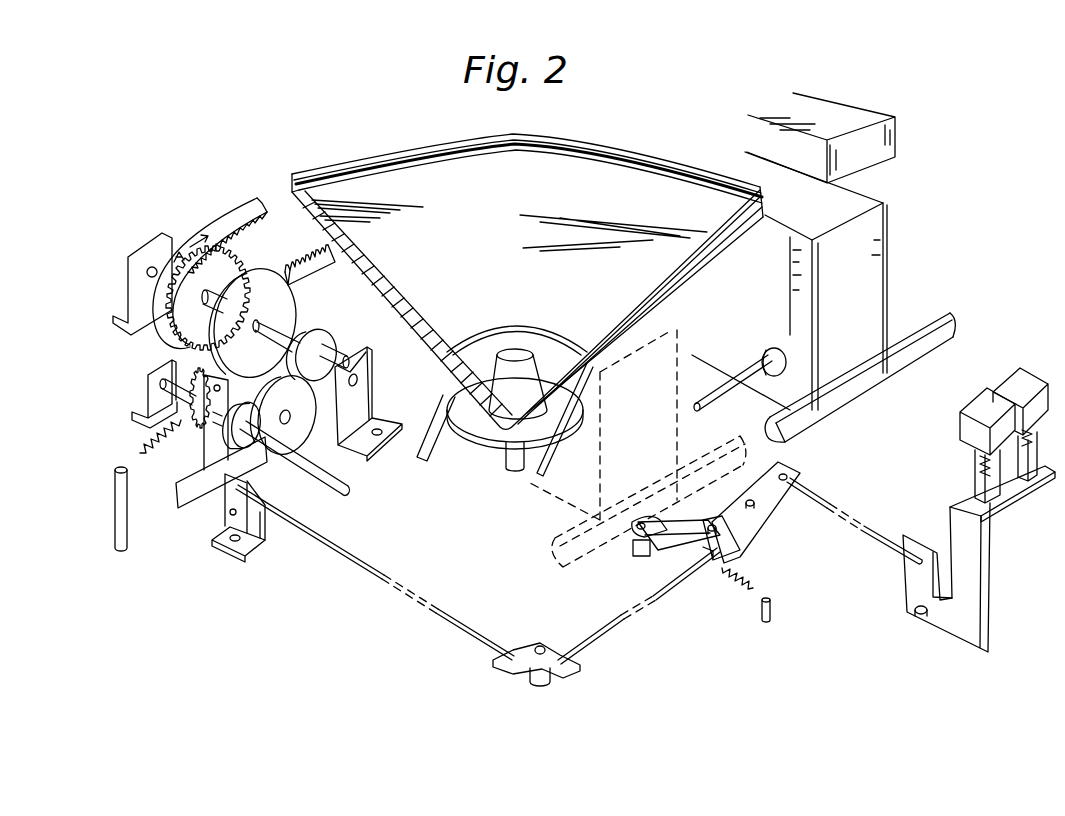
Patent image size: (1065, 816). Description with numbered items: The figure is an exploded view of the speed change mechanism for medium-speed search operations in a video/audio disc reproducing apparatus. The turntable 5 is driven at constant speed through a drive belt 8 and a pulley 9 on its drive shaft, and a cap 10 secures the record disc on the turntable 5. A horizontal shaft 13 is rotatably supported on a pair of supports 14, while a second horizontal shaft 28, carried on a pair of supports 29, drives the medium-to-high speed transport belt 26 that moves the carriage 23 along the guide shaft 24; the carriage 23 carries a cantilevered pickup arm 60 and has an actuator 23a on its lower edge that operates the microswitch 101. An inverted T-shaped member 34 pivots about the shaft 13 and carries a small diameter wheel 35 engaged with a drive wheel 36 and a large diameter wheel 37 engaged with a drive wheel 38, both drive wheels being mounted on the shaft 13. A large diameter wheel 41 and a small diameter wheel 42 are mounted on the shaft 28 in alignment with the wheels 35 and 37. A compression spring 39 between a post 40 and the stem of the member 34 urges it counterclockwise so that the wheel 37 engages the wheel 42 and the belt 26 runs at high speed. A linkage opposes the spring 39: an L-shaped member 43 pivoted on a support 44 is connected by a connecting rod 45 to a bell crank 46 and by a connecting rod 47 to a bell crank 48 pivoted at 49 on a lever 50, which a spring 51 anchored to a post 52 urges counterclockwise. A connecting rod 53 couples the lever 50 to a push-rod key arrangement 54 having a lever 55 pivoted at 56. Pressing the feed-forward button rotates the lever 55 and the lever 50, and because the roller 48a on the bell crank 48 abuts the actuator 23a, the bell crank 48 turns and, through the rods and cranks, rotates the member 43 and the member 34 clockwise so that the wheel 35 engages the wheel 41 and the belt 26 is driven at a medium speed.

The turntable 5 is at (520, 148).
The drive belt 8 is at (552, 458).
The pulley 9 is at (498, 447).
The cap 10 is at (518, 350).
The horizontal shaft 13 is at (340, 492).
The supports 14 is at (147, 392).
The carriage 23 is at (680, 340).
The actuator 23a is at (956, 318).
The guide shaft 24 is at (725, 388).
The medium-to-high speed transport belt 26 is at (238, 220).
The horizontal shaft 28 is at (366, 356).
The supports 29 is at (138, 248).
The inverted T-shaped member 34 is at (185, 510).
The small diameter wheel 35 is at (196, 374).
The drive wheel 36 is at (203, 430).
The large diameter wheel 37 is at (312, 436).
The drive wheel 38 is at (245, 449).
The compression spring 39 is at (139, 453).
The post 40 is at (117, 528).
The large diameter wheel 41 is at (296, 305).
The small diameter wheel 42 is at (325, 335).
The L-shaped member 43 is at (218, 540).
The support 44 is at (270, 540).
The connecting rod 45 is at (375, 578).
The bell crank 46 is at (575, 670).
The connecting rod 47 is at (605, 630).
The bell crank 48 is at (665, 552).
The roller 48a is at (640, 515).
The pivot 49 is at (712, 525).
The lever 50 is at (772, 505).
The spring 51 is at (755, 588).
The post 52 is at (772, 612).
The connecting rod 53 is at (882, 536).
The push-rod key arrangement 54 is at (1037, 575).
The lever 55 is at (988, 635).
The pivot 56 is at (918, 618).
The cantilevered pickup arm 60 is at (896, 152).
The microswitch 101 is at (634, 550).